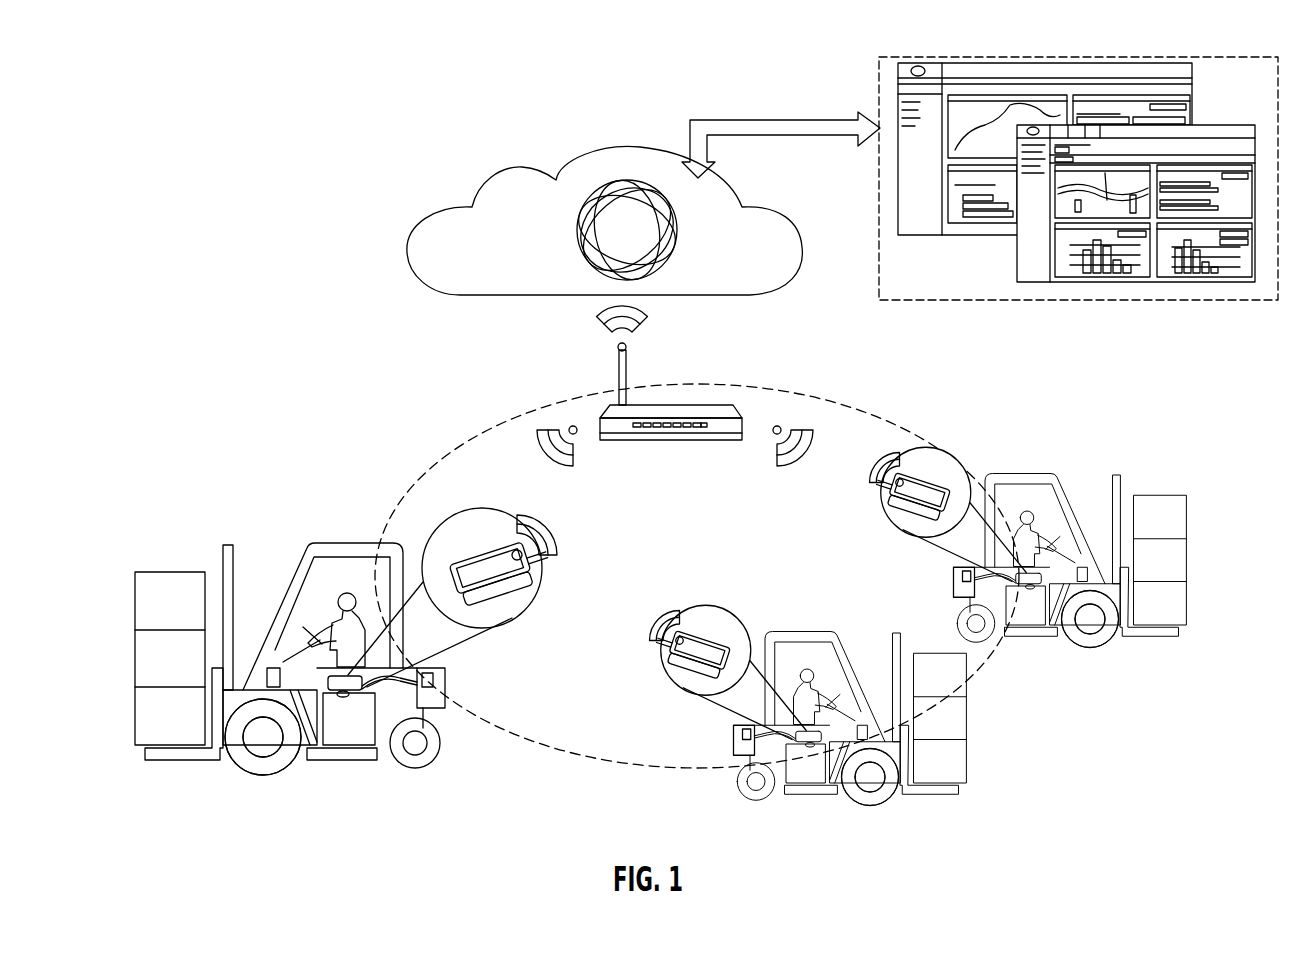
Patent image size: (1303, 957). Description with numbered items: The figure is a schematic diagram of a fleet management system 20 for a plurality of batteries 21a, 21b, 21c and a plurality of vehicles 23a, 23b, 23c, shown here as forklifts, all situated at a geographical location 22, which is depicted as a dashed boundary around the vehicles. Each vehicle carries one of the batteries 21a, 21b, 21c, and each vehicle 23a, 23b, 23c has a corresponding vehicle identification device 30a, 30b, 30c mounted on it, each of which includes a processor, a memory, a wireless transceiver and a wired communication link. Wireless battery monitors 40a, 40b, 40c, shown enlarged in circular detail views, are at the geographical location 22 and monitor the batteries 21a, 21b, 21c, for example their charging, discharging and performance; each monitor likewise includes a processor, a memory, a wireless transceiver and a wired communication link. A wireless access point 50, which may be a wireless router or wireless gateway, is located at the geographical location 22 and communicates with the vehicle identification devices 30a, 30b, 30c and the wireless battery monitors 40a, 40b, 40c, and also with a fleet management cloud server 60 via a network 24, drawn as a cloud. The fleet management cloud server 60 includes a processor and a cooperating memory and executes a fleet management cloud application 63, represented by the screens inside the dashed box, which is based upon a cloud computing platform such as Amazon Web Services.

The fleet management system 20 is at (428, 181).
The network 24 is at (407, 253).
The fleet management cloud server 60 is at (1038, 176).
The fleet management cloud application 63 is at (957, 165).
The wireless access point 50 is at (597, 422).
The geographical location 22 is at (515, 742).
The battery 21a is at (347, 733).
The battery 21b is at (808, 770).
The battery 21c is at (1032, 622).
The vehicle 23a is at (363, 762).
The vehicle 23b is at (877, 790).
The vehicle 23c is at (1090, 645).
The vehicle identification device 30a is at (436, 699).
The vehicle identification device 30b is at (732, 742).
The vehicle identification device 30c is at (953, 584).
The wireless battery monitor 40a is at (470, 562).
The wireless battery monitor 40b is at (715, 643).
The wireless battery monitor 40c is at (937, 483).